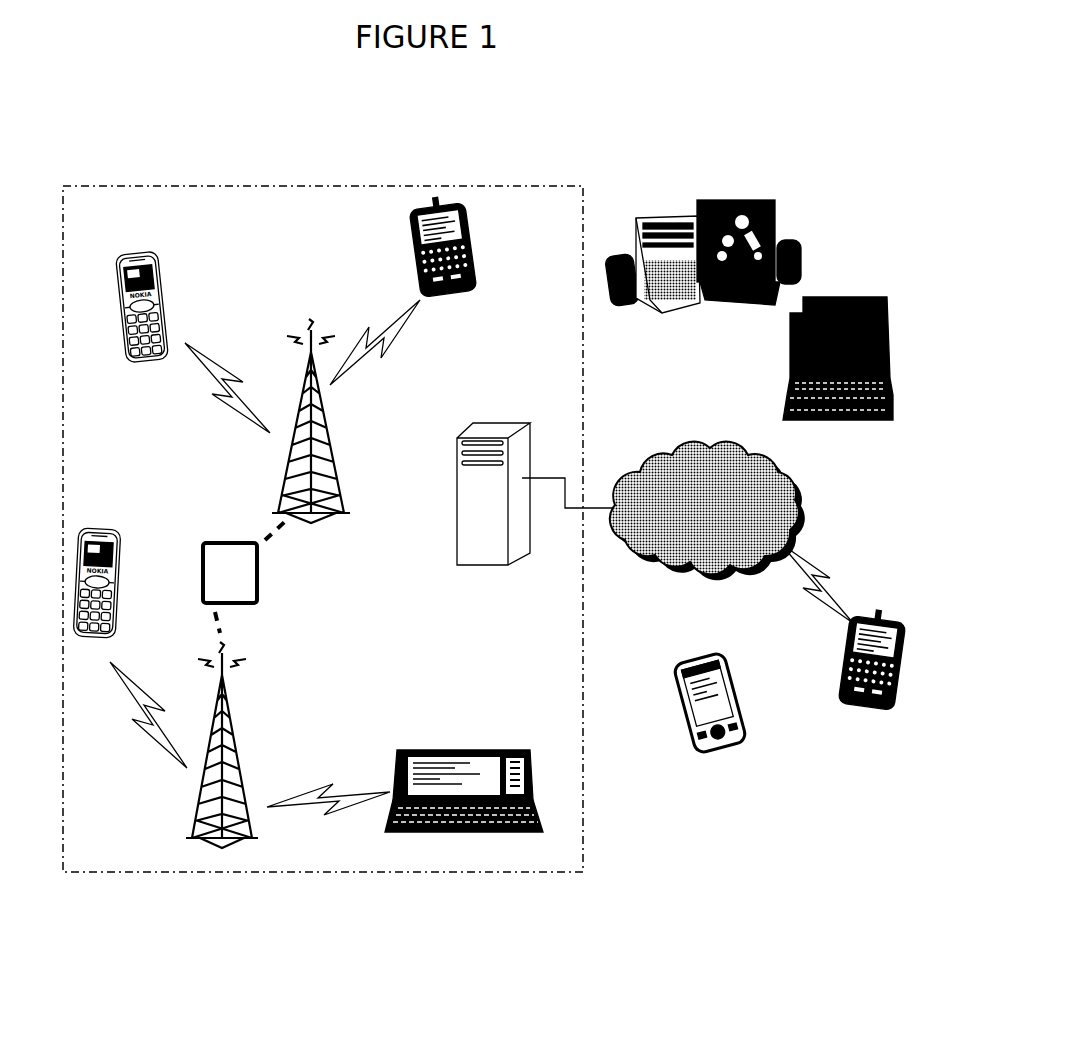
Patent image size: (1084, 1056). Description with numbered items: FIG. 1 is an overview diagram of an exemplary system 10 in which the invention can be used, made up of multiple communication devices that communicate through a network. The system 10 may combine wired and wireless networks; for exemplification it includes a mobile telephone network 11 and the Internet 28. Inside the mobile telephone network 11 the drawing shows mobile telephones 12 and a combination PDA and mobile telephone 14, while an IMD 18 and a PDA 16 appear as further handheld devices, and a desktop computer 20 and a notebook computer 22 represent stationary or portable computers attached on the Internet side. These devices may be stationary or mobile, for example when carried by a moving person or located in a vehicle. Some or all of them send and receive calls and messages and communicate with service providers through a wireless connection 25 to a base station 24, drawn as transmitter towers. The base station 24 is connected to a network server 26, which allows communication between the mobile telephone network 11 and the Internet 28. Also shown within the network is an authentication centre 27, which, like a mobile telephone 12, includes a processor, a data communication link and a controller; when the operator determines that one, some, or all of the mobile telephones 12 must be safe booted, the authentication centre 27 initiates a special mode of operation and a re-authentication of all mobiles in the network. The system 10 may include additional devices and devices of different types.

The system 10 is at (913, 845).
The mobile telephone network 11 is at (108, 222).
The mobile telephone 12 is at (135, 363).
The combination PDA and mobile telephone 14 is at (462, 752).
The PDA 16 is at (742, 712).
The IMD 18 is at (481, 252).
The desktop computer 20 is at (660, 212).
The notebook computer 22 is at (876, 425).
The base station 24 is at (283, 496).
The wireless connection 25 is at (138, 683).
The network server 26 is at (478, 568).
The authentication centre 27 is at (257, 578).
The Internet 28 is at (707, 511).